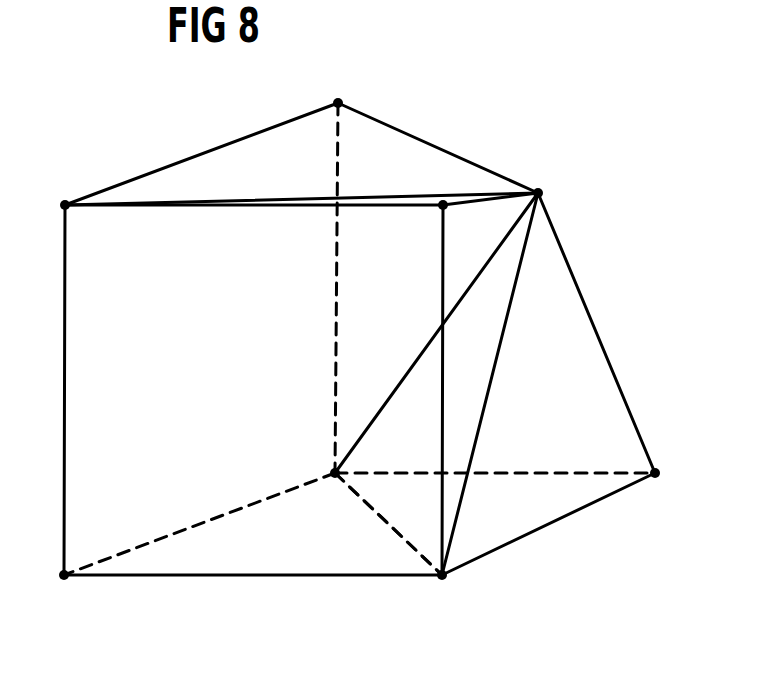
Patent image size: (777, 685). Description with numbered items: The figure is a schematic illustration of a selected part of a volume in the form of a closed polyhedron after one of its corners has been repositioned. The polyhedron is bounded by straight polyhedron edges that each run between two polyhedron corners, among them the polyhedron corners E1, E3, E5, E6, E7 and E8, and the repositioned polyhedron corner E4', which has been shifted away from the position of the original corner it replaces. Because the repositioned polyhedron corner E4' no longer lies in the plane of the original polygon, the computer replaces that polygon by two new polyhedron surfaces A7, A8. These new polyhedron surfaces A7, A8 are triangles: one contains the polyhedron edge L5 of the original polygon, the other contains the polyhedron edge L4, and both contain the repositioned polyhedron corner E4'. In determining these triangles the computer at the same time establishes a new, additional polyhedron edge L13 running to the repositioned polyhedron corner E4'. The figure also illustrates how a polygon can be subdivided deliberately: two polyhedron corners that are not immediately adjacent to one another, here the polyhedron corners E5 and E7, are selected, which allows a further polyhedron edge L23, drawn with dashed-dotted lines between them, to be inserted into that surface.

The polyhedron corner E1 is at (333, 97).
The polyhedron corner E3 is at (440, 208).
The repositioned polyhedron corner E4' is at (557, 164).
The polyhedron corner E5 is at (330, 468).
The polyhedron corner E6 is at (65, 580).
The polyhedron corner E7 is at (443, 582).
The polyhedron corner E8 is at (660, 468).
The polyhedron edge L4 is at (290, 212).
The polyhedron edge L5 is at (233, 145).
The additional polyhedron edge L13 is at (435, 190).
The further polyhedron edge L23 is at (390, 527).
The new polyhedron surface A7 is at (192, 185).
The new polyhedron surface A8 is at (372, 202).